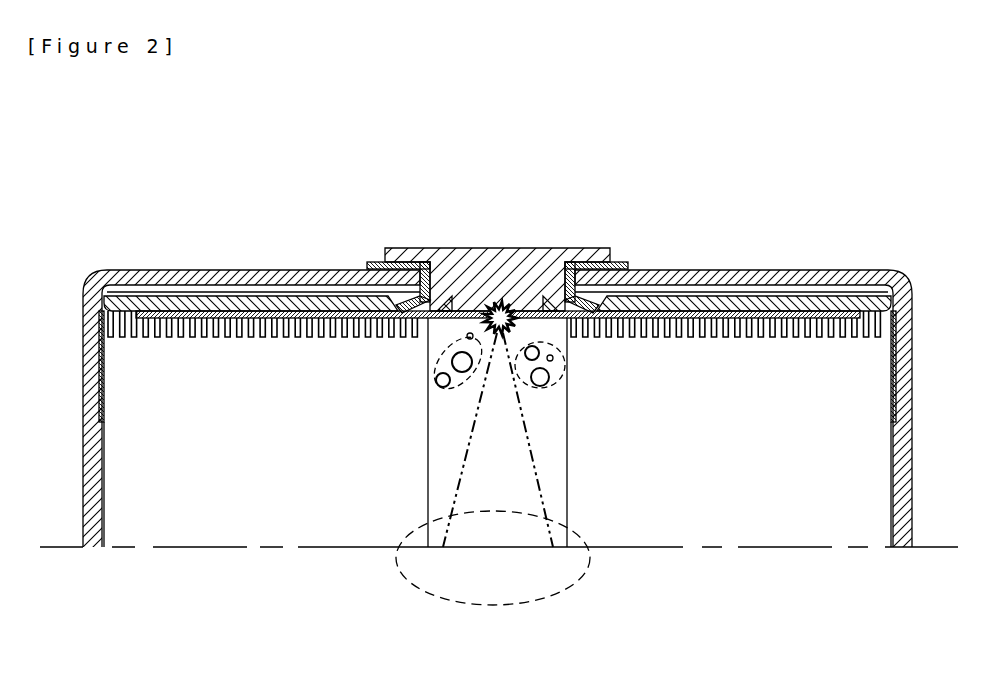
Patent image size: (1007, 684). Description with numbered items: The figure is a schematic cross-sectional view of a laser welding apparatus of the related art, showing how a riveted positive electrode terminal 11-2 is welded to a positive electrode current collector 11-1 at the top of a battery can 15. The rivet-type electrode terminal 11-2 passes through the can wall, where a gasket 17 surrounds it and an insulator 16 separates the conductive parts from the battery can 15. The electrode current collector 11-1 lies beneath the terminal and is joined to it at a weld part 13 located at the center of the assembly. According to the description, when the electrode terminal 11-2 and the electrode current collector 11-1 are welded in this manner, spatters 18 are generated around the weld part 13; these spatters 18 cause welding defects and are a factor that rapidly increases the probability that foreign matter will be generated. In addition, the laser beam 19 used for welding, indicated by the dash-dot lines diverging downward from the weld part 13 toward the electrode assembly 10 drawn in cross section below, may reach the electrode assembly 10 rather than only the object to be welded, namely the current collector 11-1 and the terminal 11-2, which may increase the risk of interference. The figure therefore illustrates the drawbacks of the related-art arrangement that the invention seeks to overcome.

The electrode assembly 10 is at (322, 515).
The electrode current collector 11-1 is at (752, 310).
The electrode terminal 11-2 is at (493, 262).
The weld part 13 is at (513, 293).
The battery can 15 is at (262, 283).
The insulator 16 is at (338, 302).
The gasket 17 is at (623, 262).
The spatter 18 is at (560, 380).
The laser beam 19 is at (493, 558).